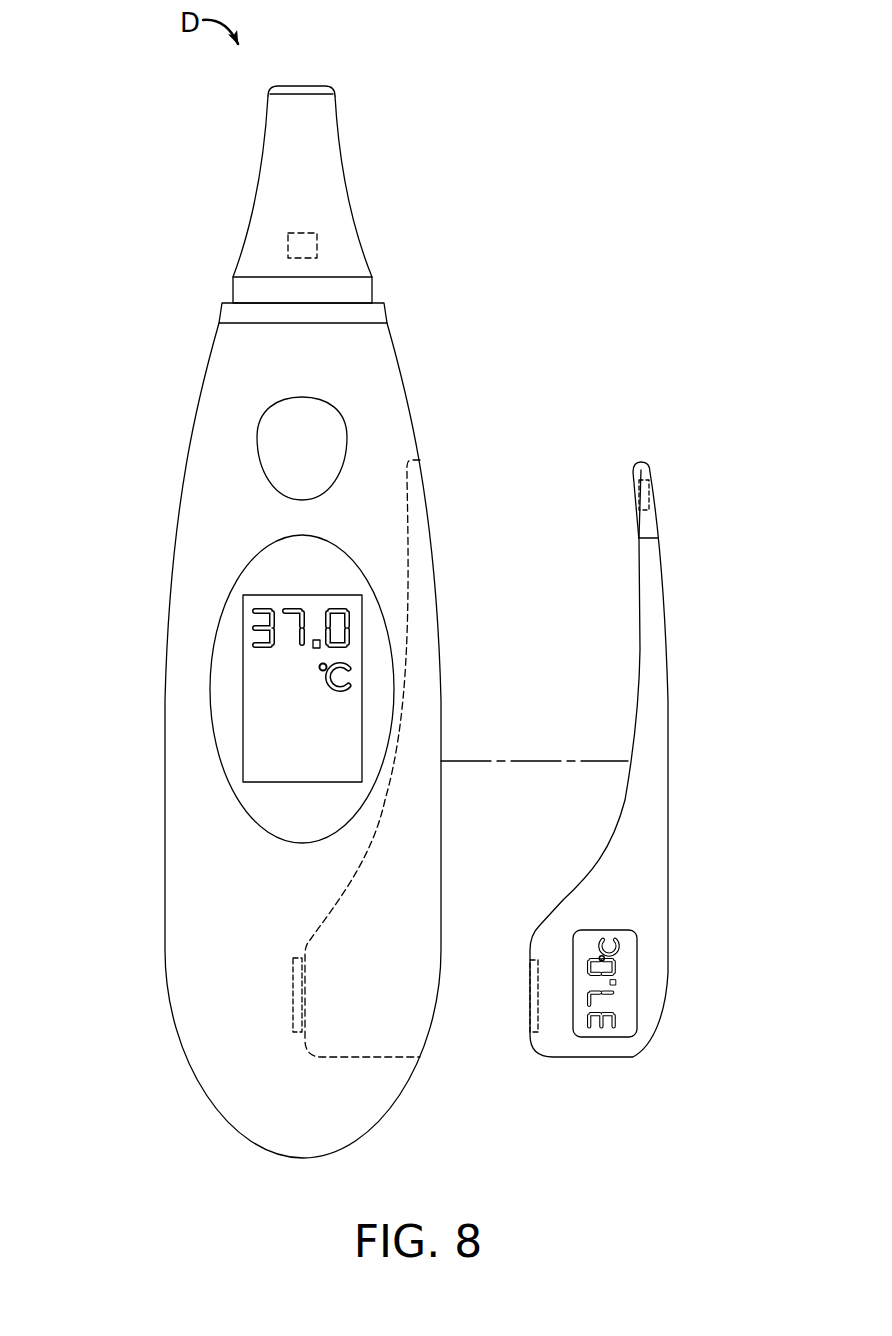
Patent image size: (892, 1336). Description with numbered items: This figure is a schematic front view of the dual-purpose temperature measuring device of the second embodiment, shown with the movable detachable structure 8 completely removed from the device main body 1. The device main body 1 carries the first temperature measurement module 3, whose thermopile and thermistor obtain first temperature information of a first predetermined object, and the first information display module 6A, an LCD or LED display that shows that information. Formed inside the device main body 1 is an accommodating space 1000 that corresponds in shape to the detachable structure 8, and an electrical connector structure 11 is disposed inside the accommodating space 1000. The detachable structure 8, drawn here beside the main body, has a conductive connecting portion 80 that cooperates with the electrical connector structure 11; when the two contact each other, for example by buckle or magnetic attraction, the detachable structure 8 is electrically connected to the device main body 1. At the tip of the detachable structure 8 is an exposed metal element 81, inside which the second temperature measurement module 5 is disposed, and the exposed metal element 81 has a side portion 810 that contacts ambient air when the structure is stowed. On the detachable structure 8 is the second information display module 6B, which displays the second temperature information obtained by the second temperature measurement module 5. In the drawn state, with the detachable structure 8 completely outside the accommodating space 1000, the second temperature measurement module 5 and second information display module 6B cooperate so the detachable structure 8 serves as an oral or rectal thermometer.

The device main body 1 is at (193, 413).
The first temperature measurement module 3 is at (318, 246).
The second temperature measurement module 5 is at (651, 491).
The first information display module 6A is at (245, 696).
The second information display module 6B is at (632, 964).
The detachable structure 8 is at (662, 749).
The conductive connecting portion 80 is at (533, 995).
The exposed metal element 81 is at (645, 527).
The side portion 810 is at (660, 510).
The electrical connector structure 11 is at (298, 996).
The accommodating space 1000 is at (406, 867).